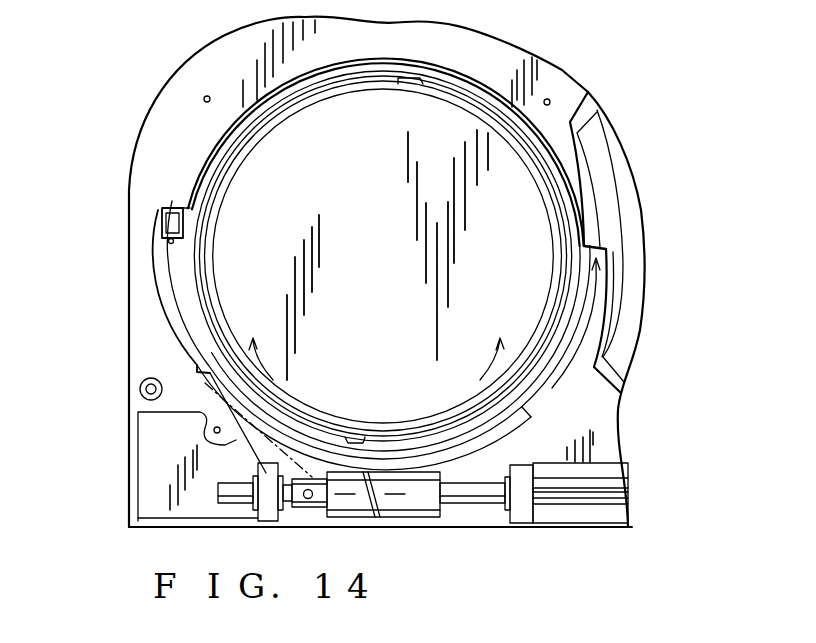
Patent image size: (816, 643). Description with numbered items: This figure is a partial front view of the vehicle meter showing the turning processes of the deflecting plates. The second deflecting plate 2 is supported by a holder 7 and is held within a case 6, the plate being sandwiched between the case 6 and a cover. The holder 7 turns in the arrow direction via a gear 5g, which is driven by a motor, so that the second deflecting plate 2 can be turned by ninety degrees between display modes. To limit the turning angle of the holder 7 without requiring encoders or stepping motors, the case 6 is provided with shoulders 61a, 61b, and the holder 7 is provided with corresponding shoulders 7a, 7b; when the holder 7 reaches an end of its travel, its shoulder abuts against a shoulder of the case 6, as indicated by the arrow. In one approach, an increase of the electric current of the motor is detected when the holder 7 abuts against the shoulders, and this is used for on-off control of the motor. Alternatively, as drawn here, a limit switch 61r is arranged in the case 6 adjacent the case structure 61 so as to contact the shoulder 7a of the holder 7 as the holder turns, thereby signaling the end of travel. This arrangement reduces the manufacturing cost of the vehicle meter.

The case 6 is at (222, 65).
The second deflecting plate 2 is at (512, 208).
The cam ring 61 is at (173, 306).
The shoulder 61a is at (173, 203).
The limit switch 61r is at (162, 222).
The shoulder 61b is at (600, 246).
The holder 7 is at (232, 442).
The shoulder 7a is at (203, 370).
The shoulder 7b is at (517, 410).
The gear 5g is at (396, 505).